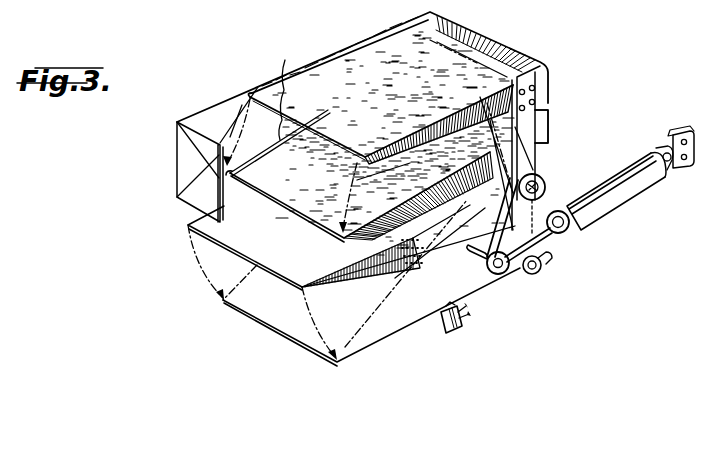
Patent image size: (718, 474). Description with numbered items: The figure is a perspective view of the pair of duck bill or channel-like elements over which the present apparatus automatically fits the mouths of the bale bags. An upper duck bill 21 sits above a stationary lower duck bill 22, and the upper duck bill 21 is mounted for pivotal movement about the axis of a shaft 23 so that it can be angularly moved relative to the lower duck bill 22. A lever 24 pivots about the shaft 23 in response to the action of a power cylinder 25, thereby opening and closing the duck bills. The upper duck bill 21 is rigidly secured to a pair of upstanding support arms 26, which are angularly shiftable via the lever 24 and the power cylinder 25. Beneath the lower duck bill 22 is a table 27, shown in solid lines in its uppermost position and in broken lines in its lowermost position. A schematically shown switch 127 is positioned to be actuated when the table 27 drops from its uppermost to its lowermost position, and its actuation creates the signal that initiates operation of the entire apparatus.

The upper duck bill 21 is at (303, 70).
The lower duck bill 22 is at (322, 230).
The shaft 23 is at (541, 176).
The lever 24 is at (540, 208).
The power cylinder 25 is at (597, 234).
The upstanding support arms 26 is at (397, 29).
The table 27 is at (210, 242).
The switch 127 is at (455, 333).